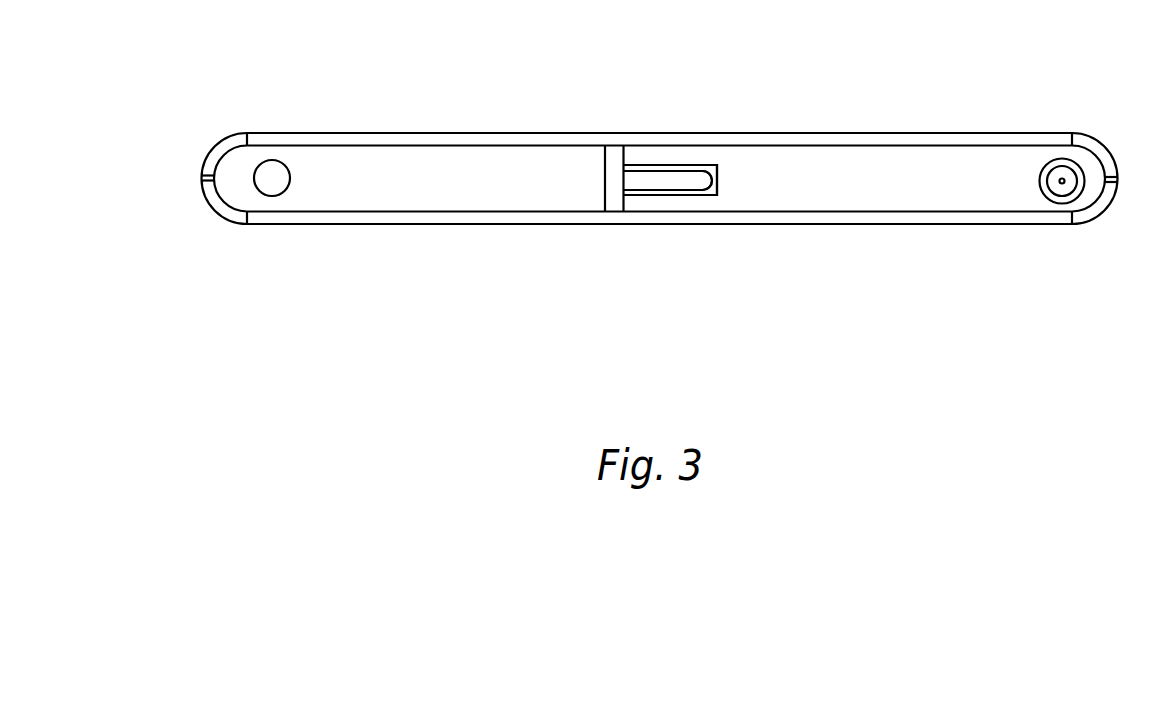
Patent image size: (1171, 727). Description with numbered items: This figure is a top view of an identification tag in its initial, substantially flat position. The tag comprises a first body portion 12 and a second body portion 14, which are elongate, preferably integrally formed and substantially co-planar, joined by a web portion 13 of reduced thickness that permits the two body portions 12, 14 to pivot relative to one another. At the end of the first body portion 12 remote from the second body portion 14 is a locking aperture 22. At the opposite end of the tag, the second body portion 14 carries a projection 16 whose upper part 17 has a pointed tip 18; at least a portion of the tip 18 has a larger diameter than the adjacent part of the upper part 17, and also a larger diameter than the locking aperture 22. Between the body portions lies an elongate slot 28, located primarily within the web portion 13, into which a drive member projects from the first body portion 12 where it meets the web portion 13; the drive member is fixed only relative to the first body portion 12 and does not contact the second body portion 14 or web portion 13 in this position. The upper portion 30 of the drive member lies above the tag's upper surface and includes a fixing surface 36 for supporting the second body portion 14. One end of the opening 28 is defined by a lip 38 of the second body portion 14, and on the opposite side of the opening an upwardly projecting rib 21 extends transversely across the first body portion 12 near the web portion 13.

The first body portion 12 is at (430, 171).
The web portion 13 is at (674, 141).
The second body portion 14 is at (935, 171).
The projection 16 is at (1038, 195).
The upper part 17 is at (1050, 165).
The pointed tip 18 is at (1068, 188).
The rib 21 is at (613, 160).
The locking aperture 22 is at (273, 163).
The elongate slot 28 is at (690, 197).
The upper portion 30 is at (647, 177).
The fixing surface 36 is at (701, 182).
The lip 38 is at (718, 197).